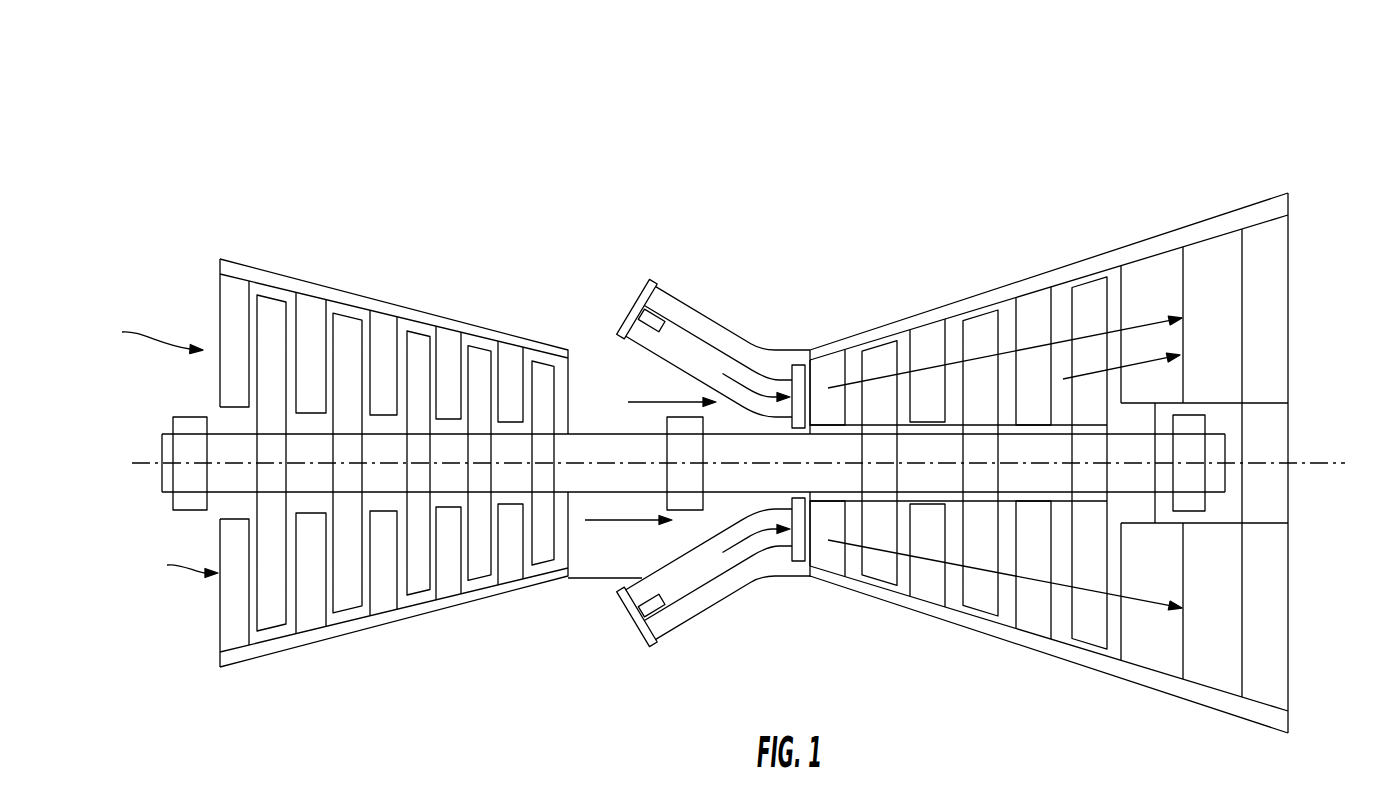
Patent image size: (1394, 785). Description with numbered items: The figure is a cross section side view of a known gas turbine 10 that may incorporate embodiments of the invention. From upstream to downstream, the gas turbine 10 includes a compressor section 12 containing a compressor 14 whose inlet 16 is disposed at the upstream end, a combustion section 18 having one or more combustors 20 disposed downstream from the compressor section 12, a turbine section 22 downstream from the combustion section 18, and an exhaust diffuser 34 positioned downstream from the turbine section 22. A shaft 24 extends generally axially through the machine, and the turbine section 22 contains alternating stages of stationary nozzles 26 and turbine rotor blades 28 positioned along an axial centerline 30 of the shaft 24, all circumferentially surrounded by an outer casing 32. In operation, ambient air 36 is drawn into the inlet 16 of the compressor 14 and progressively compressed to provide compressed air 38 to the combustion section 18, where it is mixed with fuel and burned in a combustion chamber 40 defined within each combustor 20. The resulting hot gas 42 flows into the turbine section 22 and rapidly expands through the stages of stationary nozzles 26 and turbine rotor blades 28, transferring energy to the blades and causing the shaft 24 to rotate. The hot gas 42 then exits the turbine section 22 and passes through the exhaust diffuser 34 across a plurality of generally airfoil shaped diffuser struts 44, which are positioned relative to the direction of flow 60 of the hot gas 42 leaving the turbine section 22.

The gas turbine 10 is at (1297, 88).
The compressor section 12 is at (568, 317).
The compressor 14 is at (282, 642).
The inlet 16 is at (218, 322).
The combustion section 18 is at (810, 317).
The combustor 20 is at (675, 294).
The turbine section 22 is at (810, 317).
The shaft 24 is at (608, 445).
The stationary nozzles 26 is at (923, 338).
The turbine rotor blades 28 is at (985, 605).
The axial centerline 30 is at (147, 461).
The outer casing 32 is at (1038, 653).
The exhaust diffuser 34 is at (1121, 225).
The ambient air 36 is at (154, 448).
The compressed air 38 is at (673, 398).
The combustion chamber 40 is at (682, 342).
The hot gas 42 is at (750, 383).
The diffuser struts 44 is at (1222, 303).
The direction of flow 60 is at (1135, 365).